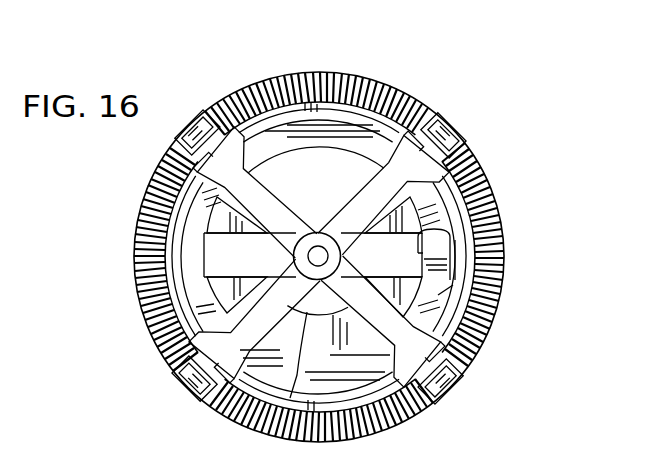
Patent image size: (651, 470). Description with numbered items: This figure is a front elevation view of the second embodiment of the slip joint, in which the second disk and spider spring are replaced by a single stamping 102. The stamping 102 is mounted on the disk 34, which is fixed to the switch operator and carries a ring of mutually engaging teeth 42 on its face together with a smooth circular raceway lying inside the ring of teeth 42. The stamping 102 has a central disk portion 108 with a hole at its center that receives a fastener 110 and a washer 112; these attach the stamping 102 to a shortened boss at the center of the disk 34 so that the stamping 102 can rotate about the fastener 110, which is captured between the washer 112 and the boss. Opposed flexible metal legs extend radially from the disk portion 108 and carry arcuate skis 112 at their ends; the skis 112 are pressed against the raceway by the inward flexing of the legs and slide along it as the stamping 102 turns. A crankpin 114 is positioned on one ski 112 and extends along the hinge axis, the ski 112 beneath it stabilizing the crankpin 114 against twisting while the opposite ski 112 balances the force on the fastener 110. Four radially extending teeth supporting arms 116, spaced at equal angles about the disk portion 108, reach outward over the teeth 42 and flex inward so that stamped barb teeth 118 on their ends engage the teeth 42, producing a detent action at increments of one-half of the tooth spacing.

The disk 34 is at (503, 197).
The teeth 42 is at (471, 362).
The stamping 102 is at (208, 253).
The central disk portion 108 is at (253, 423).
The fastener 110 is at (318, 233).
The washer 112 is at (238, 100).
The crankpin 114 is at (461, 238).
The teeth supporting arms 116 is at (387, 165).
The barb teeth 118 is at (458, 128).